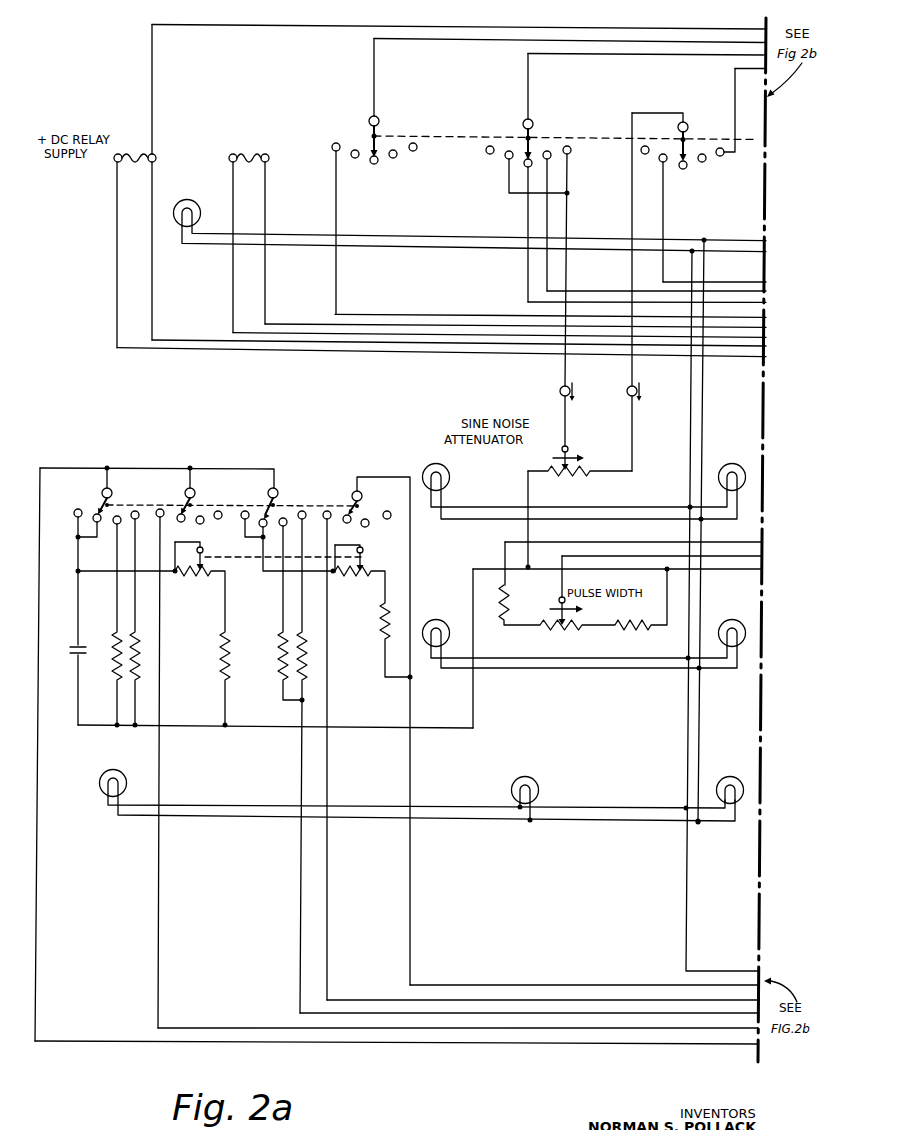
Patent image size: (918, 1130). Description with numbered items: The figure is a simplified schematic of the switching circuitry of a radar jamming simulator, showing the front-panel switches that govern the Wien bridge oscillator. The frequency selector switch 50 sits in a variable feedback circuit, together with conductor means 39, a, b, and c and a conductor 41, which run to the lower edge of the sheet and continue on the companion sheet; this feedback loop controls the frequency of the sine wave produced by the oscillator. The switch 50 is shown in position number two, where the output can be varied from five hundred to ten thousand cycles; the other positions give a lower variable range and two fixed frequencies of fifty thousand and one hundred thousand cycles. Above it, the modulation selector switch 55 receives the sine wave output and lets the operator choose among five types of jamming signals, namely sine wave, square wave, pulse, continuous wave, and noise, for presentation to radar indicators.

The modulation selector switch 55 is at (612, 76).
The frequency selector switch 50 is at (258, 431).
The conductor means 39 is at (719, 1017).
The conductor 41 is at (725, 1046).
The conductor means a is at (718, 1031).
The conductor means b is at (722, 989).
The conductor means c is at (722, 1003).